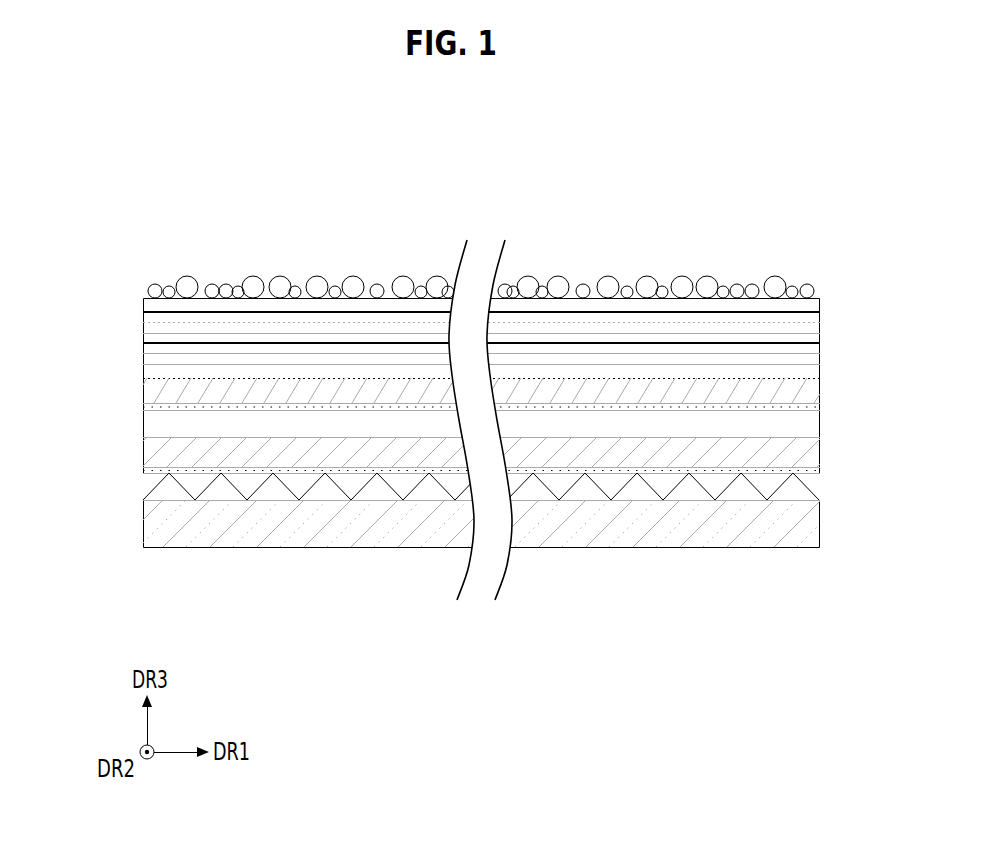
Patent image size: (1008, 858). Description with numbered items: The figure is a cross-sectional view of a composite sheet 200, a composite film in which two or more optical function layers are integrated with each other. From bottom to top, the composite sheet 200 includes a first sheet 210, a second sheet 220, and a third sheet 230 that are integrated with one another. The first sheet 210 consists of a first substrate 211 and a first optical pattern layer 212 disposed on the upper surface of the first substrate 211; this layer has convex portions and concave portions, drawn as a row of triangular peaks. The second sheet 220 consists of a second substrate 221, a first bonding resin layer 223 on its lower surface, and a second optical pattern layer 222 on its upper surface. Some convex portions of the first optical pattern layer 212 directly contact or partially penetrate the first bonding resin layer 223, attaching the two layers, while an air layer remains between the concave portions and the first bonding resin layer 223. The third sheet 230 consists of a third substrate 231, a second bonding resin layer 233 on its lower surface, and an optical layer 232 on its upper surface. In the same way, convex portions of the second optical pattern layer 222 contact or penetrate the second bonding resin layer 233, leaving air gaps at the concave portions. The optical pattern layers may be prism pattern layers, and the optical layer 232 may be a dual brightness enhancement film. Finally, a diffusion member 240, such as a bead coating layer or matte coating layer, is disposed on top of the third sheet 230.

The composite sheet 200 is at (711, 223).
The first sheet 210 is at (132, 527).
The first substrate 211 is at (814, 524).
The first optical pattern layer 212 is at (814, 486).
The second sheet 220 is at (140, 378).
The second substrate 221 is at (814, 452).
The second optical pattern layer 222 is at (814, 424).
The first bonding resin layer 223 is at (814, 470).
The third sheet 230 is at (132, 347).
The third substrate 231 is at (814, 386).
The optical layer 232 is at (814, 333).
The second bonding resin layer 233 is at (814, 406).
The diffusion member 240 is at (132, 293).